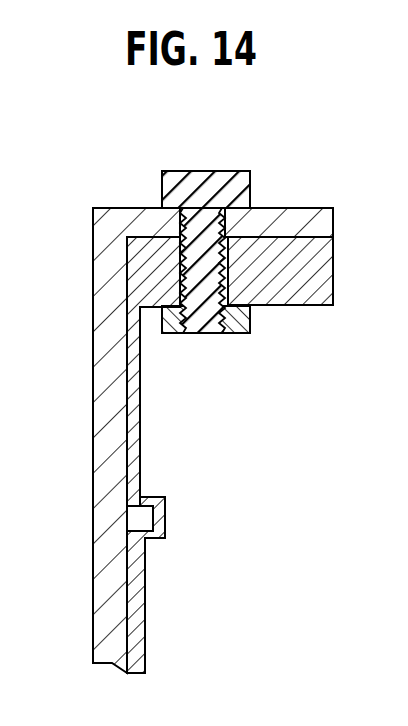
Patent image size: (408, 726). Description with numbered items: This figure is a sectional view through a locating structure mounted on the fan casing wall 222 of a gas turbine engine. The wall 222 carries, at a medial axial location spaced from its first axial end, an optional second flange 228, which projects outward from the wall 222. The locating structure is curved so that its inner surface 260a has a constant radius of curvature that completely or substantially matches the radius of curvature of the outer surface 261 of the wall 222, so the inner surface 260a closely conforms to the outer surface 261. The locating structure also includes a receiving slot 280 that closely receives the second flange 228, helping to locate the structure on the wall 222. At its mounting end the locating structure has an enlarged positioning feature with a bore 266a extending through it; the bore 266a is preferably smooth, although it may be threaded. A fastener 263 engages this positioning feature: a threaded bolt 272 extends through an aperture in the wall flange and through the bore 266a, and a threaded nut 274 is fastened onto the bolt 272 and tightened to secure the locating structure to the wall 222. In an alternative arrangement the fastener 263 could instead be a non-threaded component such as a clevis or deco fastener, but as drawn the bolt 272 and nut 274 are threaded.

The fastener 263 is at (225, 206).
The bolt 272 is at (167, 172).
The bore 266a is at (223, 221).
The nut 274 is at (251, 329).
The outer surface 261 is at (130, 446).
The second flange 228 is at (148, 503).
The receiving slot 280 is at (148, 539).
The wall 222 is at (98, 648).
The inner surface 260a is at (125, 632).